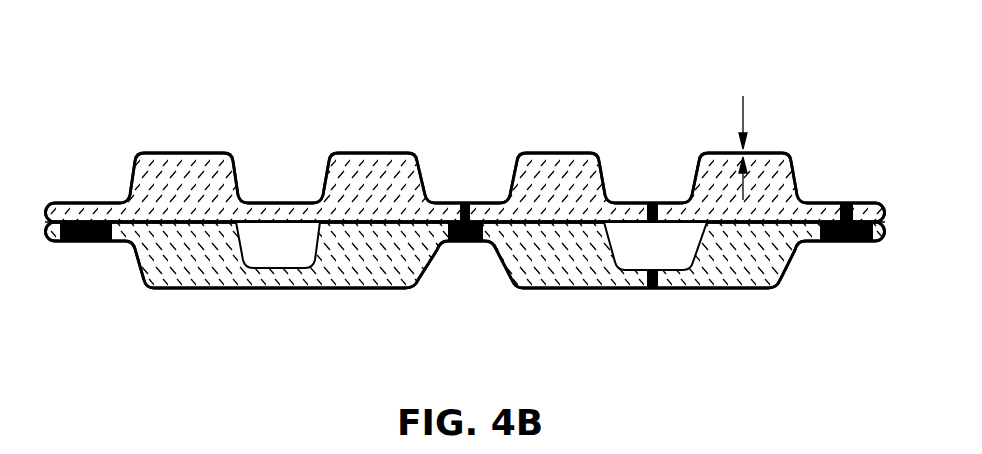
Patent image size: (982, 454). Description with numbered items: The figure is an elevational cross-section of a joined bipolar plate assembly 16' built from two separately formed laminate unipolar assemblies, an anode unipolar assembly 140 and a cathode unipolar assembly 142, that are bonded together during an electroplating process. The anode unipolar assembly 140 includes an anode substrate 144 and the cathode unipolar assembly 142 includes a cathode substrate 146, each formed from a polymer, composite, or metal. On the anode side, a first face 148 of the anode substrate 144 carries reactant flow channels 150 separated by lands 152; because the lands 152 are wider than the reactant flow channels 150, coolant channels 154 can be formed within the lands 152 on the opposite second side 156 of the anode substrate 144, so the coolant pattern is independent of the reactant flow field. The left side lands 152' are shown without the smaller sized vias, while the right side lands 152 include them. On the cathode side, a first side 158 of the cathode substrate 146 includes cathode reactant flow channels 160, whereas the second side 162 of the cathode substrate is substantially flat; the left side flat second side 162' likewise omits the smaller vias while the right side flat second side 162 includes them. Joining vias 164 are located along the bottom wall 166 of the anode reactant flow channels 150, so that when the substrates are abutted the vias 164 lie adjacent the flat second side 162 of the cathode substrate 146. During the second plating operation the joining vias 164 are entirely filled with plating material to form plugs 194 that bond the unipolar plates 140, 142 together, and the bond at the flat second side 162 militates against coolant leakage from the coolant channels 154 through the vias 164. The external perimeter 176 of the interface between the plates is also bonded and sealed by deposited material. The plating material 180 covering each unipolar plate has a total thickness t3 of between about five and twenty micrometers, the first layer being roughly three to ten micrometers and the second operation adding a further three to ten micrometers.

The bipolar plate assembly 16' is at (462, 142).
The anode unipolar assembly 140 is at (146, 312).
The cathode unipolar assembly 142 is at (141, 135).
The anode substrate 144 is at (209, 268).
The cathode substrate 146 is at (192, 156).
The first side of cathode substrate 158 is at (530, 152).
The plating material 180 is at (789, 160).
The left side flat second side 162' is at (322, 159).
The second side of cathode substrate 162 is at (695, 162).
The plating material thickness t3 is at (744, 137).
The external perimeter 176 is at (890, 215).
The cathode reactant flow channels 160 is at (255, 192).
The coolant channels 154 is at (256, 257).
The reactant flow channels 150 is at (445, 272).
The left side lands 152' is at (279, 319).
The lands 152 is at (645, 318).
The first face of anode substrate 148 is at (769, 291).
The joining vias 164 is at (61, 243).
The plugs 194 is at (93, 241).
The bottom wall 166 is at (452, 241).
The second side of anode substrate 156 is at (606, 250).